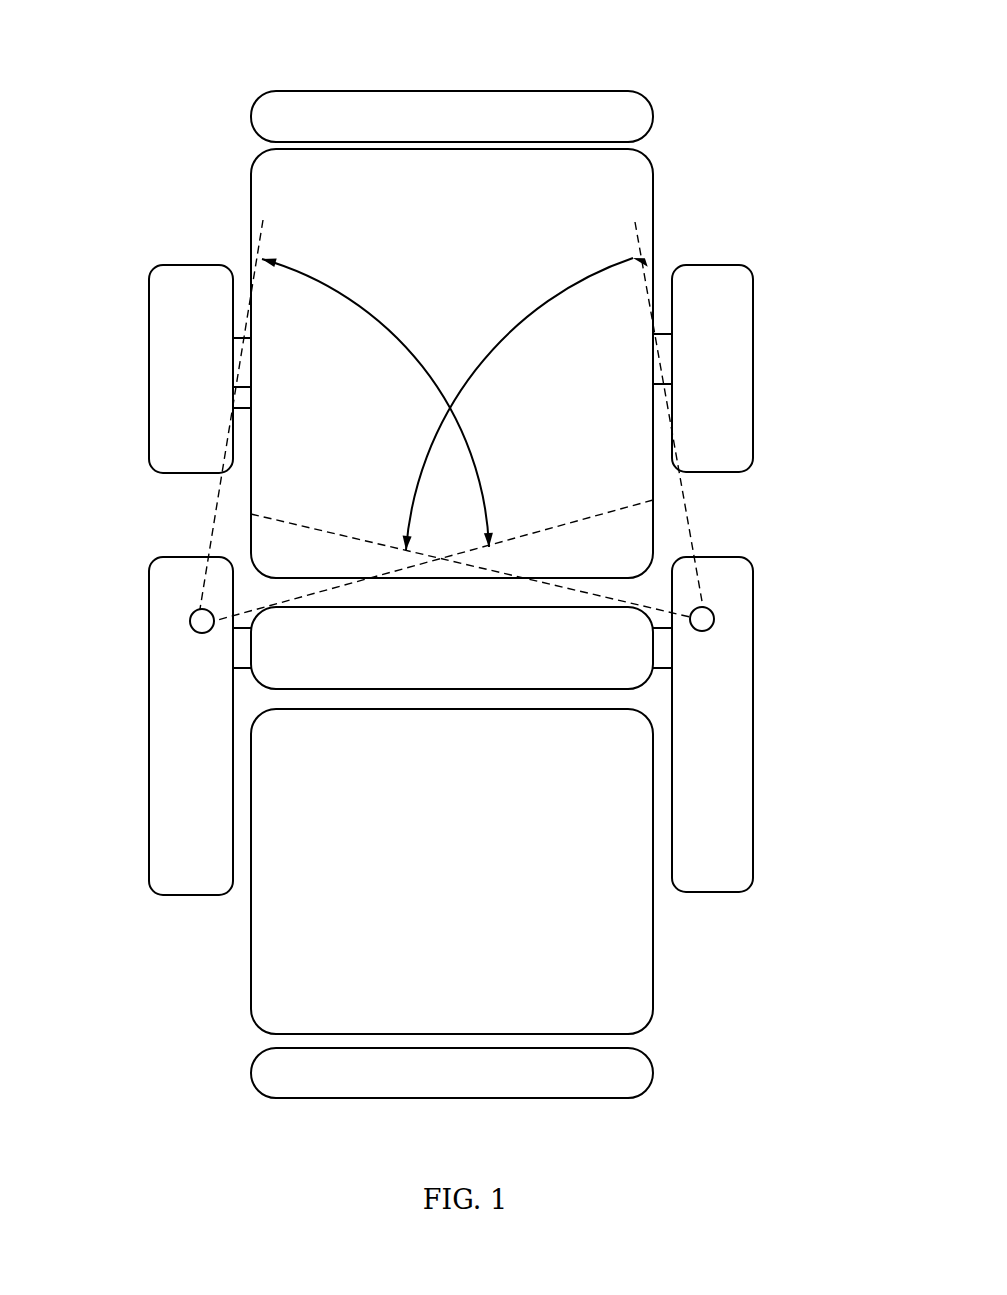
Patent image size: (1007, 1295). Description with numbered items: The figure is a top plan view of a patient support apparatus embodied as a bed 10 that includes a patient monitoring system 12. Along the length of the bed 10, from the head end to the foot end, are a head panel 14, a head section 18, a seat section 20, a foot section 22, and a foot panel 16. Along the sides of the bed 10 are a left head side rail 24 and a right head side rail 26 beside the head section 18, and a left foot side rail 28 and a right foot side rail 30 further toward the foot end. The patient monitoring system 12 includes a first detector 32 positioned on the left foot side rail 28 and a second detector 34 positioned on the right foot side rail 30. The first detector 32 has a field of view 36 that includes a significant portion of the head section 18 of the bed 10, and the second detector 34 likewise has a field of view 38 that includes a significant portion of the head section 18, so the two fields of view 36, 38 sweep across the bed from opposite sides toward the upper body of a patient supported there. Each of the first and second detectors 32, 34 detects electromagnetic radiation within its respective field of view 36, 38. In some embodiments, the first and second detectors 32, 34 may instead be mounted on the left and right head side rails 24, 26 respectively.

The bed 10 is at (130, 113).
The patient monitoring system 12 is at (756, 513).
The head panel 14 is at (578, 103).
The foot panel 16 is at (362, 1087).
The head section 18 is at (637, 207).
The seat section 20 is at (480, 668).
The foot section 22 is at (640, 942).
The left head side rail 24 is at (757, 372).
The right head side rail 26 is at (147, 376).
The left foot side rail 28 is at (755, 851).
The right foot side rail 30 is at (148, 812).
The first detector 32 is at (714, 619).
The second detector 34 is at (190, 621).
The field of view 36 is at (570, 270).
The field of view 38 is at (331, 283).